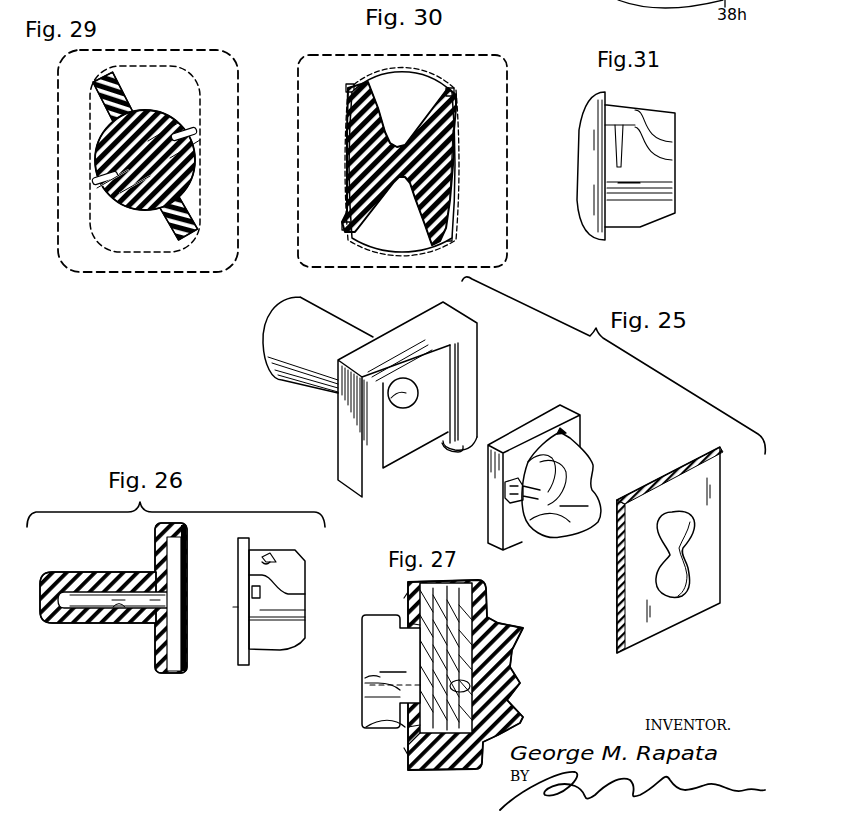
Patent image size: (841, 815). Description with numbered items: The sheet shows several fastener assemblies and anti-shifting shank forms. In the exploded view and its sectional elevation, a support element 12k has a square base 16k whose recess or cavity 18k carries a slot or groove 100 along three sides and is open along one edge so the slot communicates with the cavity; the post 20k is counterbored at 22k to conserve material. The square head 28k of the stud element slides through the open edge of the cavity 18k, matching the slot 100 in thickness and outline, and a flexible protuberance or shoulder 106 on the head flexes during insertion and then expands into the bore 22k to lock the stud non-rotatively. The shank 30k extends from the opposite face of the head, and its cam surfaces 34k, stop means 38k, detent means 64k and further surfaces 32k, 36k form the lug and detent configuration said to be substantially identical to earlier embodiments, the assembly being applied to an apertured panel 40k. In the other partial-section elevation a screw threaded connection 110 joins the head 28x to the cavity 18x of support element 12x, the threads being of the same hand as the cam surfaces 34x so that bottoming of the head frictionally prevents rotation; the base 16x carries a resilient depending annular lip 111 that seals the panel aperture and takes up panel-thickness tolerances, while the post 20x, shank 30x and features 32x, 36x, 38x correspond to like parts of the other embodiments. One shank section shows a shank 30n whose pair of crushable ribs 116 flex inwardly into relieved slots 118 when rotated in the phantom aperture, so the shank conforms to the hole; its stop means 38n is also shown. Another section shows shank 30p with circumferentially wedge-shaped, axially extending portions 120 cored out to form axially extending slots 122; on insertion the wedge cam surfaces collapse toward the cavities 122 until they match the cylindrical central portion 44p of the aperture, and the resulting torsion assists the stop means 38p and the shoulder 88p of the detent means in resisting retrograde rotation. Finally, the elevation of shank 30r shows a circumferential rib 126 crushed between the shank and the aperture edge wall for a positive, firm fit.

In FIG. 26, the support element 12k is at (65, 652).
In FIG. 25, the base 16k is at (348, 430).
In FIG. 25, the recess or cavity 18k is at (432, 396).
In FIG. 25, the post 20k is at (312, 317).
In FIG. 26, the post 20k is at (67, 571).
In FIG. 25, the counterbore 22k is at (407, 405).
In FIG. 26, the counterbore 22k is at (116, 610).
In FIG. 25, the head 28k is at (550, 418).
In FIG. 26, the head 28k is at (242, 537).
In FIG. 25, the shank 30k is at (561, 485).
In FIG. 26, the shank 30k is at (302, 570).
In FIG. 25, the head lobe surface 32k is at (593, 520).
In FIG. 26, the cam surface 34k is at (287, 587).
In FIG. 26, the notch 36k is at (272, 557).
In FIG. 25, the pointer tab 38k is at (565, 433).
In FIG. 26, the pointer tab 38k is at (262, 555).
In FIG. 25, the panel 40k is at (708, 545).
In FIG. 25, the locking block 64k is at (517, 495).
In FIG. 26, the locking block 64k is at (256, 600).
In FIG. 25, the slot or groove 100 is at (457, 443).
In FIG. 26, the slot or groove 100 is at (173, 672).
In FIG. 26, the flexible protuberance or shoulder 106 is at (232, 607).
In FIG. 29, the shank 30n is at (133, 212).
In FIG. 29, the panel opening 38n is at (192, 219).
In FIG. 29, the crushable ribs 116 is at (200, 140).
In FIG. 29, the relieved slots 118 is at (100, 184).
In FIG. 30, the stud section 30p is at (367, 167).
In FIG. 30, the stop means 38p is at (352, 87).
In FIG. 30, the central portion of the aperture 44p is at (452, 147).
In FIG. 30, the shoulder of the detent means 88p is at (452, 93).
In FIG. 30, the wedge-shaped portions 120 is at (353, 127).
In FIG. 30, the axially extending slots 122 is at (393, 143).
In FIG. 31, the shank 30r is at (665, 175).
In FIG. 31, the circumferential rib 126 is at (618, 123).
In FIG. 27, the support element 12x is at (509, 594).
In FIG. 27, the base 16x is at (457, 770).
In FIG. 27, the cavity 18x is at (500, 684).
In FIG. 27, the panel portion 20x is at (517, 623).
In FIG. 27, the head 28x is at (405, 768).
In FIG. 27, the stud head 30x is at (395, 670).
In FIG. 27, the nut 32x is at (375, 630).
In FIG. 27, the cam surfaces 34x is at (378, 696).
In FIG. 27, the notch 36x is at (403, 732).
In FIG. 27, the rib 38x is at (365, 678).
In FIG. 27, the screw threaded connection 110 is at (430, 770).
In FIG. 27, the annular lip 111 is at (407, 598).